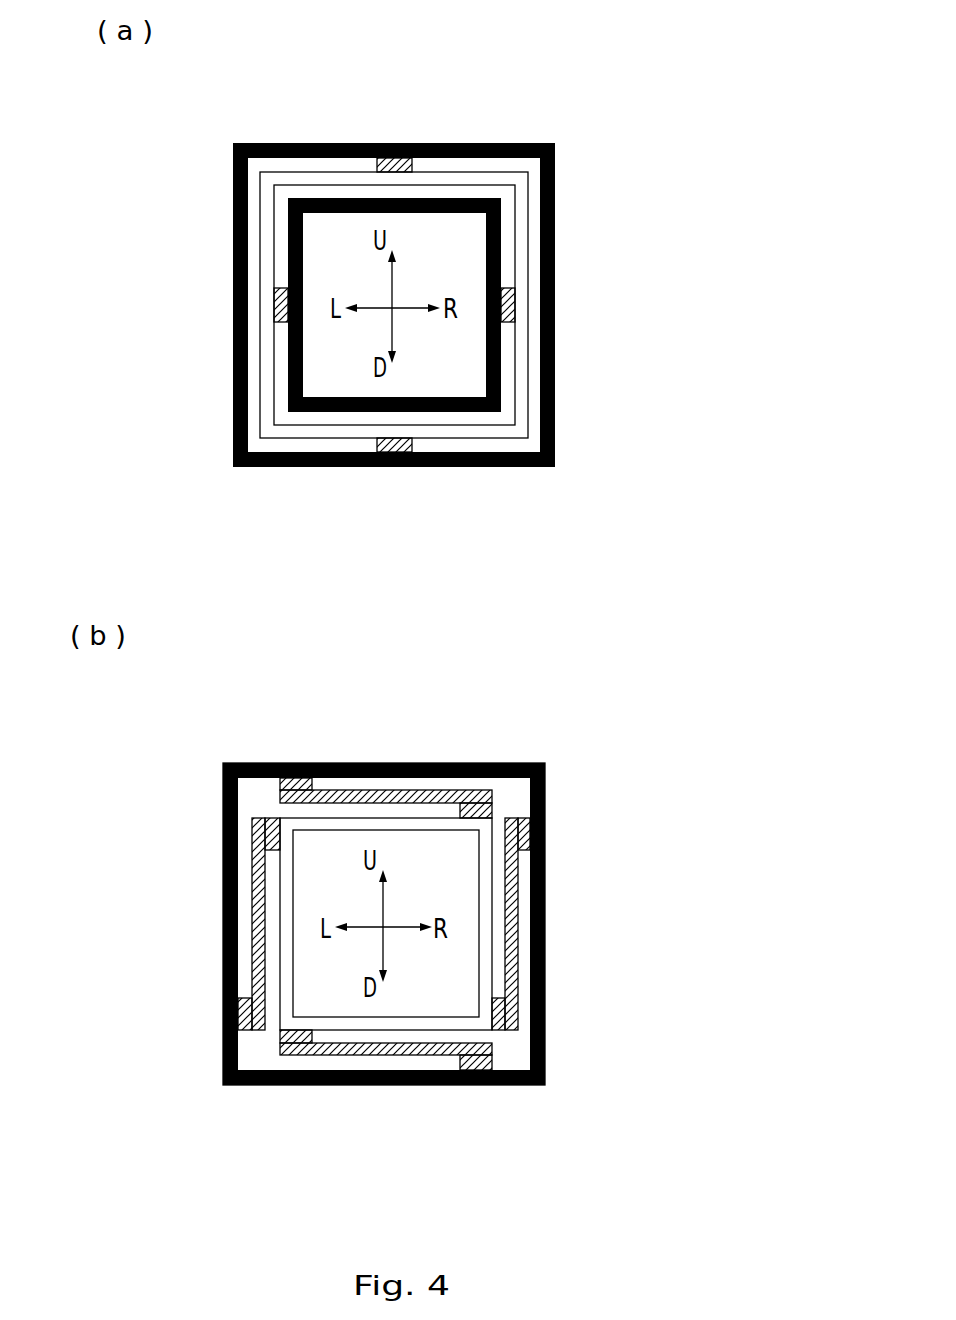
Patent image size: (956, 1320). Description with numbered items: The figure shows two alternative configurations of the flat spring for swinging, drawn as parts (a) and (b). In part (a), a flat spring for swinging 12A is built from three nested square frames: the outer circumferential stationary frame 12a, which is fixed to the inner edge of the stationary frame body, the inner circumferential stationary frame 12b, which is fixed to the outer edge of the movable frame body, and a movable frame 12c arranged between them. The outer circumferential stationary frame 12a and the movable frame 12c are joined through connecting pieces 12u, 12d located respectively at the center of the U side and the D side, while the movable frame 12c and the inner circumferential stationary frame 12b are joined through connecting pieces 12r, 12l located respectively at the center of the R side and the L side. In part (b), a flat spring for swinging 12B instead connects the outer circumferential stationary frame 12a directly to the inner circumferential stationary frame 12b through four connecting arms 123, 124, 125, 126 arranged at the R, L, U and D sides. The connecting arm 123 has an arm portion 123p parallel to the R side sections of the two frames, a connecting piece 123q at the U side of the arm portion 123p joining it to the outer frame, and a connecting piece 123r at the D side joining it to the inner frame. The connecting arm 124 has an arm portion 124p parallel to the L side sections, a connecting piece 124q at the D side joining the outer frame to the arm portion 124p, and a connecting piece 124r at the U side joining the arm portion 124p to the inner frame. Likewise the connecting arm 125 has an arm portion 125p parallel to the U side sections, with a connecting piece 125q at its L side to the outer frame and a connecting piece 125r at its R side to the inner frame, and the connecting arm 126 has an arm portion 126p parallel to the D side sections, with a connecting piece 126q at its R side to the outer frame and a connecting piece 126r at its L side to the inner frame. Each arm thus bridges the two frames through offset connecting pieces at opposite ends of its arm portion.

The flat spring for swinging 12A is at (505, 143).
The flat spring for swinging 12B is at (483, 748).
The outer circumferential stationary frame 12a is at (556, 262).
The inner circumferential stationary frame 12b is at (502, 376).
The movable frame 12c is at (517, 211).
The connecting piece 12u is at (402, 143).
The connecting piece 12d is at (400, 467).
The connecting piece 12l is at (283, 320).
The connecting piece 12r is at (508, 307).
The connecting arm 123 is at (589, 924).
The arm portion 123p is at (508, 905).
The connecting piece 123q is at (524, 845).
The connecting piece 123r is at (497, 1004).
The connecting arm 124 is at (170, 924).
The arm portion 124p is at (252, 925).
The connecting piece 124q is at (243, 1010).
The connecting piece 124r is at (272, 842).
The connecting arm 125 is at (385, 738).
The arm portion 125p is at (395, 792).
The connecting piece 125q is at (297, 785).
The connecting piece 125r is at (462, 765).
The connecting arm 126 is at (386, 1123).
The arm portion 126p is at (383, 1045).
The connecting piece 126q is at (464, 1105).
The connecting piece 126r is at (297, 1035).